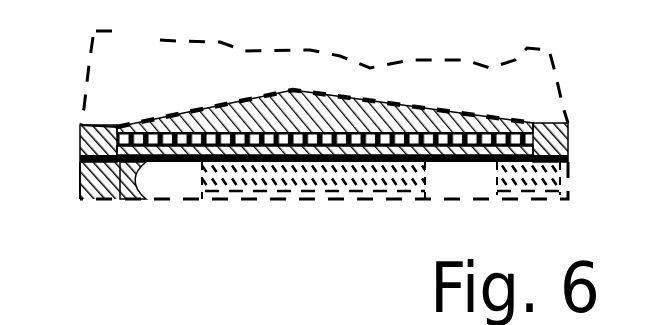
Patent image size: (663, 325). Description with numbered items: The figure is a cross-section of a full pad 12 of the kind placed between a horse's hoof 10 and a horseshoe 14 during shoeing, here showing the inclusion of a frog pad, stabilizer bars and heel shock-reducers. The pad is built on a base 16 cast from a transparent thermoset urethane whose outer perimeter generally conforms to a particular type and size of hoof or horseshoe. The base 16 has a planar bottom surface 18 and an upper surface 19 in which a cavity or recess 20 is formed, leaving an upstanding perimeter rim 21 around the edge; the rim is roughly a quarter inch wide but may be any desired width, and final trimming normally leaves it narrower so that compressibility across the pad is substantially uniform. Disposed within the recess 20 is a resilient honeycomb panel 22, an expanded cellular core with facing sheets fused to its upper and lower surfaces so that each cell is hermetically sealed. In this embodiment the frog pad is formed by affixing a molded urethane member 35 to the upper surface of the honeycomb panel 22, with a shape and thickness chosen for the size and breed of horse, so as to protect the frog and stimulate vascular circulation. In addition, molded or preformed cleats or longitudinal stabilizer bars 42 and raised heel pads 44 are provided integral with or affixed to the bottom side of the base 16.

The horse's hoof 10 is at (96, 72).
The full pad 12 is at (80, 162).
The horseshoe 14 is at (97, 199).
The base 16 is at (200, 168).
The planar bottom surface 18 is at (143, 168).
The upper surface 19 is at (100, 124).
The cavity or recess 20 is at (373, 142).
The perimeter rim 21 is at (80, 140).
The resilient honeycomb panel 22 is at (180, 113).
The molded urethane member 35 is at (303, 96).
The longitudinal stabilizer bars 42 is at (322, 180).
The raised heel pads 44 is at (522, 188).